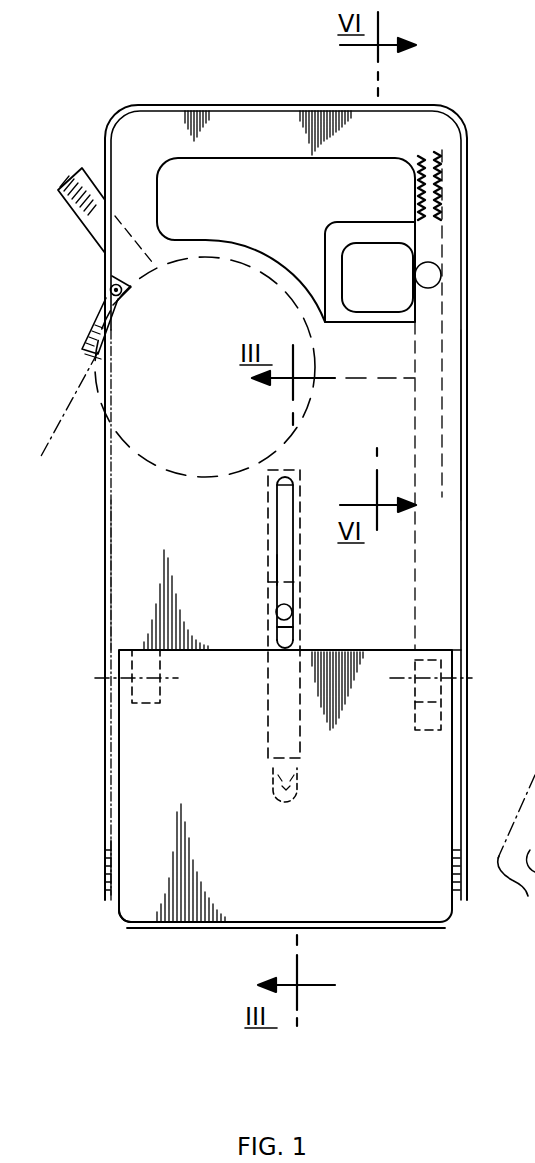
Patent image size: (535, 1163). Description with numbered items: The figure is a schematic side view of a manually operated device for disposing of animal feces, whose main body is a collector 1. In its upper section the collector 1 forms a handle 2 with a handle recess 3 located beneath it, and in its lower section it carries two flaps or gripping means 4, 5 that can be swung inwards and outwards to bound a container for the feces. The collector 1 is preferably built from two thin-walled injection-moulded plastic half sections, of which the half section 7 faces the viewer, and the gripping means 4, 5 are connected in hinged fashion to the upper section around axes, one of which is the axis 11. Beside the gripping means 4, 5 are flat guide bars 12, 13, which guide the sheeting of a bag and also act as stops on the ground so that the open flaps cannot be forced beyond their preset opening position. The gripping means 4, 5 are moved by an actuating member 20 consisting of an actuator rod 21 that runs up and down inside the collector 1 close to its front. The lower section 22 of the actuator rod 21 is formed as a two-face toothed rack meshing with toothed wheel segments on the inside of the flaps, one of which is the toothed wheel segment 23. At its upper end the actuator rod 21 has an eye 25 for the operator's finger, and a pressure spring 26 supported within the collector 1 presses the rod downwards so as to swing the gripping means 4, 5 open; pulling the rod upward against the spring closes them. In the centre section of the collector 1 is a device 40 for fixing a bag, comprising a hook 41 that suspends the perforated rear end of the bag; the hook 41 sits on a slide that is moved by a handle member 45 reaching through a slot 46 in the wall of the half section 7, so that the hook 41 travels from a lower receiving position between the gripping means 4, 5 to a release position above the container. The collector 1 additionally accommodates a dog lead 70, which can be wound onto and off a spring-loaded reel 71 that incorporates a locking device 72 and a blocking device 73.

The collector 1 is at (468, 170).
The handle 2 is at (299, 130).
The handle recess 3 is at (237, 180).
The gripping means 4 is at (526, 898).
The gripping means 5 is at (140, 905).
The half section 7 is at (128, 600).
The axis 11 is at (172, 680).
The guide bar 12 is at (104, 888).
The guide bar 13 is at (457, 776).
The actuating member 20 is at (445, 333).
The actuator rod 21 is at (450, 424).
The lower section of actuator rod 22 is at (463, 662).
The toothed wheel segment 23 is at (516, 780).
The eye 25 is at (397, 222).
The pressure spring 26 is at (442, 143).
The bag fixing device 40 is at (294, 557).
The hook 41 is at (304, 792).
The handle member 45 is at (290, 621).
The slot 46 is at (275, 557).
The dog lead 70 is at (43, 440).
The reel 71 is at (226, 478).
The locking device 72 is at (72, 204).
The blocking device 73 is at (113, 292).